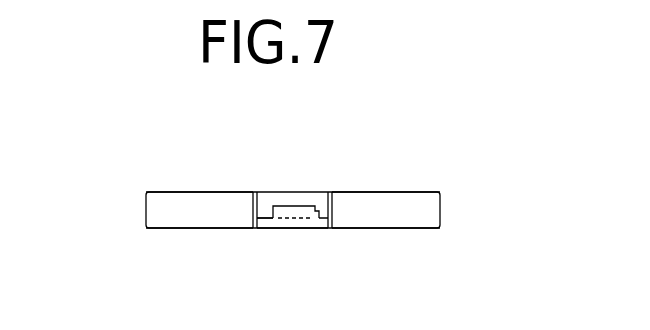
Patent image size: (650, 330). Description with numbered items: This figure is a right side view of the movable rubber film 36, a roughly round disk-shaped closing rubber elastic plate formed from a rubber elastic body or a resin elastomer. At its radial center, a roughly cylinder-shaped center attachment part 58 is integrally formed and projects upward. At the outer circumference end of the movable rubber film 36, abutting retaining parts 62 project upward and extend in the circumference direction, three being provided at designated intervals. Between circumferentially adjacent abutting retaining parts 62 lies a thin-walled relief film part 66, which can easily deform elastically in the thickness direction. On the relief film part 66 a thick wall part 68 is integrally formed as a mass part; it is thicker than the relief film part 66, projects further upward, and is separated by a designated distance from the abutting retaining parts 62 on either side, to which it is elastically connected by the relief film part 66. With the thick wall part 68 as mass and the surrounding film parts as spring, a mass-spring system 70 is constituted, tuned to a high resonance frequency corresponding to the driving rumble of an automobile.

The movable rubber film 36 is at (185, 159).
The abutting retaining part 62 is at (165, 205).
The center attachment part 58 is at (283, 203).
The thick wall part 68 is at (295, 212).
The relief film part 66 is at (268, 217).
The mass-spring system 70 is at (304, 232).